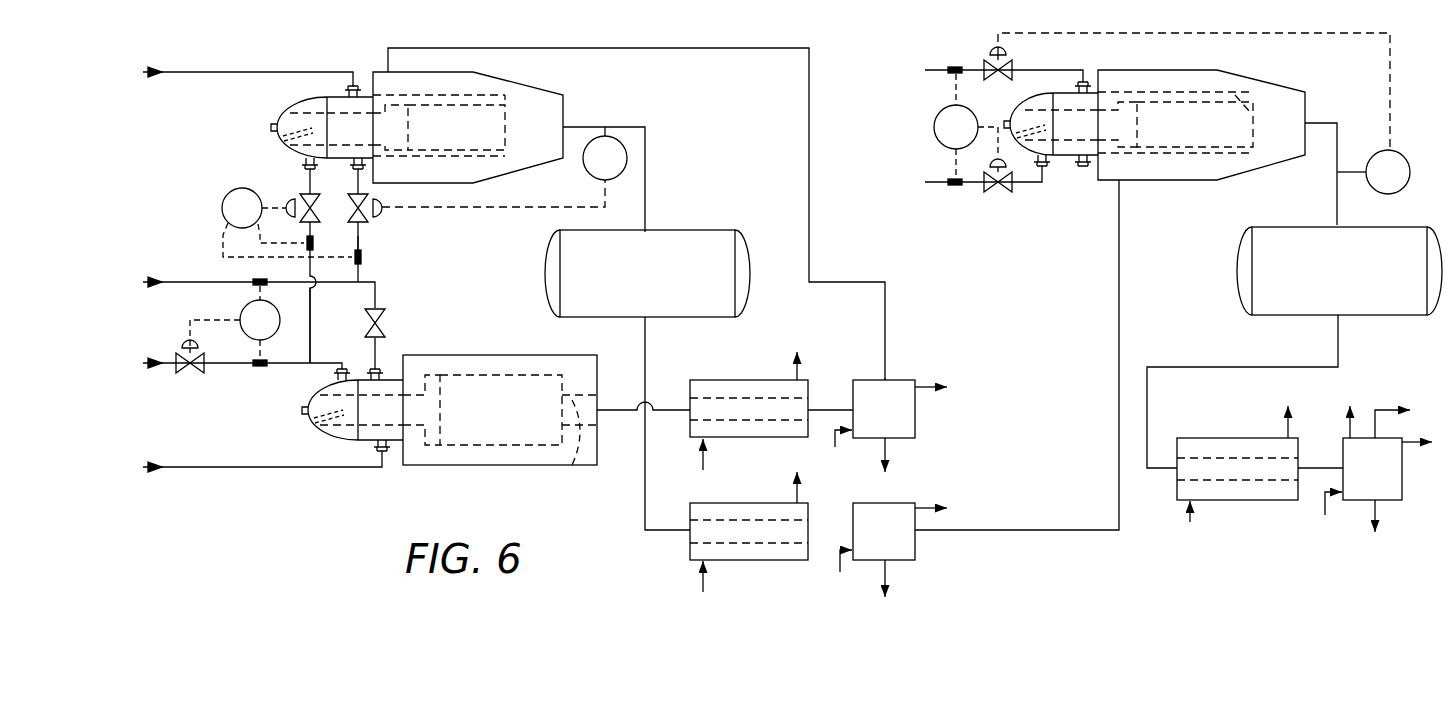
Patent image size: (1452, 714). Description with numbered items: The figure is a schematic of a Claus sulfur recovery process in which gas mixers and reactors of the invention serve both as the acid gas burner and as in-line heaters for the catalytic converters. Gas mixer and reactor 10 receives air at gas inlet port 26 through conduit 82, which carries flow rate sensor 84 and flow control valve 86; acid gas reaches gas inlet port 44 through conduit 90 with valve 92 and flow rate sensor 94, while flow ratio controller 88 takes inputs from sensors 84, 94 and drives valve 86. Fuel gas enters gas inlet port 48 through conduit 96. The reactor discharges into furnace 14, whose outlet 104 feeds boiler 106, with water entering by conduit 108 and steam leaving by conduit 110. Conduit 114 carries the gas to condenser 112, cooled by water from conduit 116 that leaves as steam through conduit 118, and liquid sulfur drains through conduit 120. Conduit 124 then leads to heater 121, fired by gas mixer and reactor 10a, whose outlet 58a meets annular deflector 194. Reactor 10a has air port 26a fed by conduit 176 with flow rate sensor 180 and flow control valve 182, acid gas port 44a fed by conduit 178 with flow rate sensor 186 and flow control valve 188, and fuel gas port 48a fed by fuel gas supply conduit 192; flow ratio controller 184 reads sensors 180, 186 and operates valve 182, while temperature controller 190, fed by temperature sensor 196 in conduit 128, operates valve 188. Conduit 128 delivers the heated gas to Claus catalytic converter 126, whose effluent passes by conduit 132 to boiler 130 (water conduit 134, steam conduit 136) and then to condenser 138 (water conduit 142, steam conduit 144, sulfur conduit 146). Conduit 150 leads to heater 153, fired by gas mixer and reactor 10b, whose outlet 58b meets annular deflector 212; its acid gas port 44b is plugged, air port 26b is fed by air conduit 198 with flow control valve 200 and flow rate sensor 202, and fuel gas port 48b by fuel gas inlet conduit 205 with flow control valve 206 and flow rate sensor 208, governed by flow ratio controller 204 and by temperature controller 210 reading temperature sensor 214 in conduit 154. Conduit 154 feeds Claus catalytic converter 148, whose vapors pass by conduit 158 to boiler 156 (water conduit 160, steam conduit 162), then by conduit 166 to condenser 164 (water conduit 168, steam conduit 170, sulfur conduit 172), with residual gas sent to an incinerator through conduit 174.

The gas mixer and reactor 10 is at (300, 422).
The gas mixer and reactor 10a is at (268, 126).
The gas mixer and reactor 10b is at (1013, 110).
The furnace 14 is at (540, 468).
The gas inlet port 26 is at (336, 376).
The gas inlet port 26a is at (302, 163).
The gas inlet port 26b is at (1046, 168).
The gas inlet port 44 is at (372, 358).
The gas inlet port 44a is at (352, 166).
The gas inlet port 44b is at (1078, 167).
The gas inlet port 48 is at (390, 452).
The gas inlet port 48a is at (356, 85).
The gas inlet port 48b is at (1088, 82).
The outlet 58a is at (439, 125).
The outlet 58b is at (1137, 128).
The conduit 82 is at (276, 365).
The flow rate sensor 84 is at (256, 368).
The flow control valve 86 is at (188, 374).
The flow ratio controller 88 is at (278, 317).
The conduit 90 is at (383, 326).
The valve 92 is at (380, 316).
The flow rate sensor 94 is at (258, 274).
The conduit 96 is at (235, 468).
The outlet 104 is at (572, 468).
The boiler 106 is at (727, 380).
The conduit 108 is at (703, 466).
The conduit 110 is at (800, 368).
The condenser 112 is at (902, 420).
The conduit 114 is at (828, 408).
The conduit 116 is at (835, 447).
The conduit 118 is at (932, 386).
The conduit 120 is at (888, 450).
The heater 121 is at (510, 85).
The conduit 124 is at (865, 282).
The Claus catalytic converter 126 is at (664, 284).
The conduit 128 is at (652, 160).
The boiler 130 is at (768, 562).
The conduit 132 is at (652, 482).
The conduit 134 is at (703, 588).
The conduit 136 is at (800, 490).
The condenser 138 is at (902, 542).
The conduit 142 is at (840, 572).
The conduit 144 is at (928, 506).
The conduit 146 is at (890, 576).
The Claus catalytic converter 148 is at (1354, 280).
The conduit 150 is at (1028, 530).
The heater 153 is at (1262, 72).
The conduit 154 is at (1336, 198).
The boiler 156 is at (1215, 437).
The conduit 158 is at (1205, 358).
The conduit 160 is at (1190, 525).
The conduit 162 is at (1282, 425).
The condenser 164 is at (1391, 478).
The conduit 166 is at (1316, 466).
The conduit 168 is at (1325, 515).
The conduit 170 is at (1412, 440).
The conduit 172 is at (1378, 522).
The conduit 174 is at (1385, 406).
The conduit 176 is at (317, 312).
The conduit 178 is at (361, 240).
The flow rate sensor 180 is at (313, 243).
The flow control valve 182 is at (300, 200).
The flow ratio controller 184 is at (218, 207).
The flow rate sensor 186 is at (364, 258).
The flow control valve 188 is at (370, 200).
The temperature controller 190 is at (598, 186).
The fuel gas supply conduit 192 is at (237, 71).
The annular deflector 194 is at (508, 108).
The temperature sensor 196 is at (612, 122).
The air conduit 198 is at (1030, 184).
The flow control valve 200 is at (992, 186).
The flow rate sensor 202 is at (952, 186).
The flow ratio controller 204 is at (926, 136).
The fuel gas inlet conduit 205 is at (1050, 69).
The flow control valve 206 is at (983, 52).
The flow rate sensor 208 is at (958, 56).
The temperature controller 210 is at (1394, 150).
The annular deflector 212 is at (1280, 121).
The temperature sensor 214 is at (1325, 178).